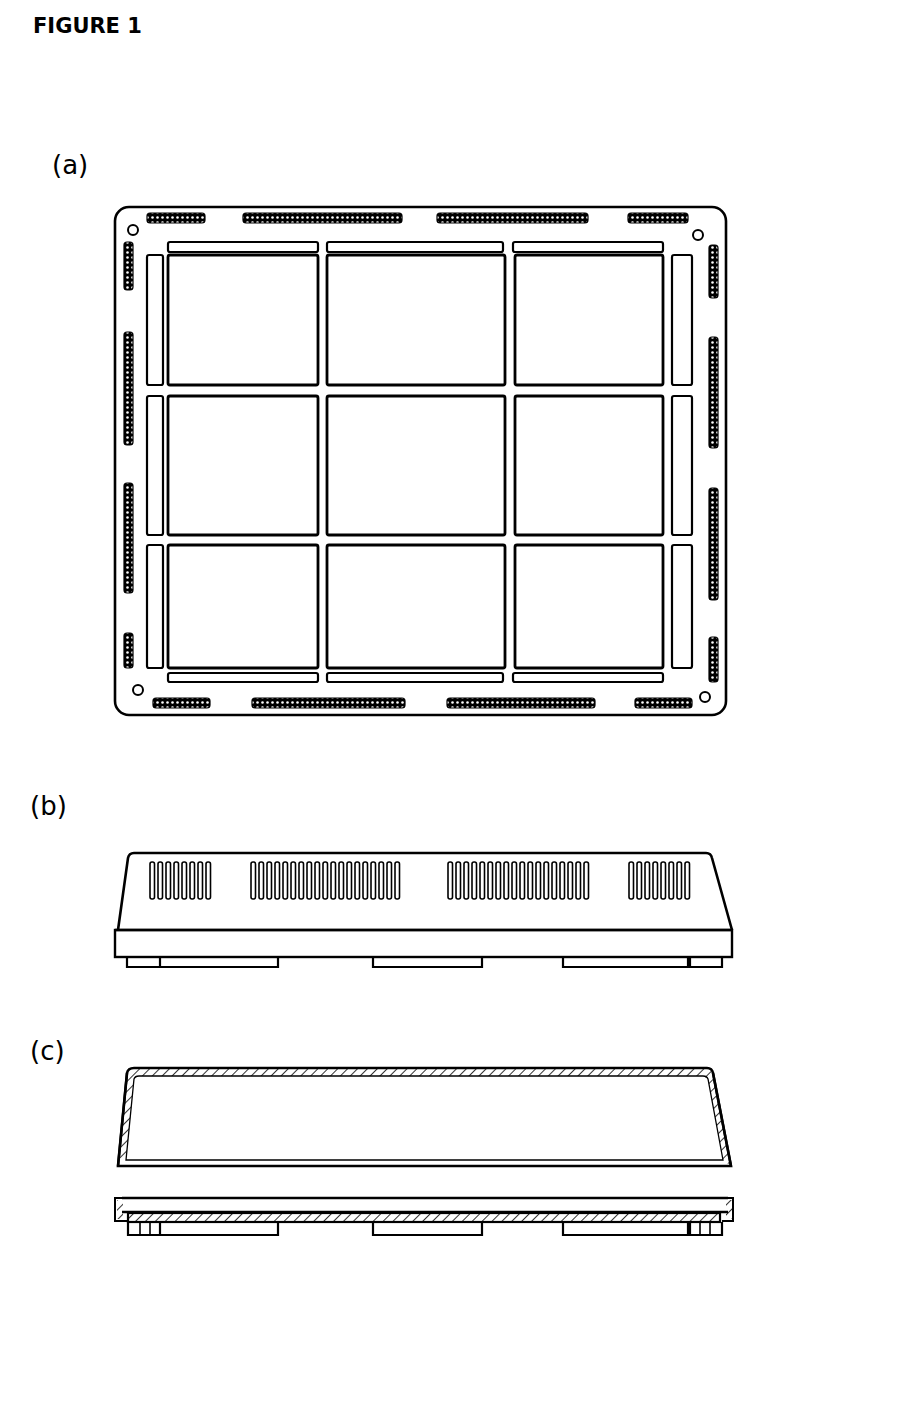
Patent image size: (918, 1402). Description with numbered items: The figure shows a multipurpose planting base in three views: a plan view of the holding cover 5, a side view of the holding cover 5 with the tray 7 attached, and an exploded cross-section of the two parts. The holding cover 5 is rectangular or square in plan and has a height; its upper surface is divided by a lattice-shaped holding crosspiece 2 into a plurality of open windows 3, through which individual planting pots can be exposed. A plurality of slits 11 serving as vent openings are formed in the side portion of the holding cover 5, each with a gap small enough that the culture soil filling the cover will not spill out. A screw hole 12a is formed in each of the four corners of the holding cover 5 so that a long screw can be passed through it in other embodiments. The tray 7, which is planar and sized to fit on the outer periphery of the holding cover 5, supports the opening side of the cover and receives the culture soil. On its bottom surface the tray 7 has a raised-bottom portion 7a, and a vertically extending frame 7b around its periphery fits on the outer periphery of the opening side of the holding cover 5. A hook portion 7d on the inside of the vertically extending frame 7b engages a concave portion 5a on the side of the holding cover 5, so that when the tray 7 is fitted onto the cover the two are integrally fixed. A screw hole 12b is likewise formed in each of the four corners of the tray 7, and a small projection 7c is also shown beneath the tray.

The holding crosspiece 2 is at (320, 456).
The open window 3 is at (212, 454).
The holding cover 5 is at (455, 207).
The concave portion 5a is at (117, 1150).
The tray 7 is at (518, 948).
The raised-bottom portion 7a is at (208, 967).
The vertically extending frame 7b is at (726, 950).
The projection 7c is at (140, 967).
The hook portion 7d is at (116, 1195).
The slit 11 is at (358, 880).
The screw hole 12a is at (702, 230).
The screw hole 12b is at (147, 1230).